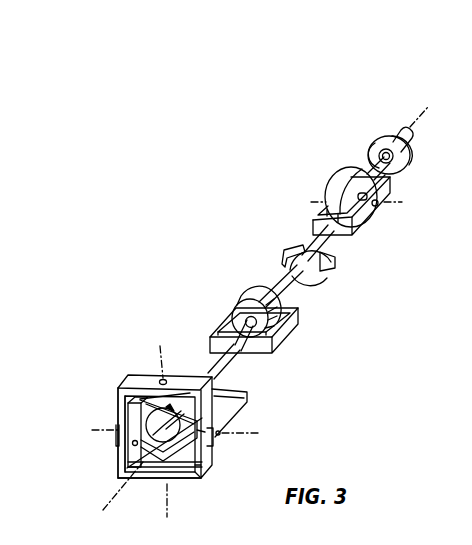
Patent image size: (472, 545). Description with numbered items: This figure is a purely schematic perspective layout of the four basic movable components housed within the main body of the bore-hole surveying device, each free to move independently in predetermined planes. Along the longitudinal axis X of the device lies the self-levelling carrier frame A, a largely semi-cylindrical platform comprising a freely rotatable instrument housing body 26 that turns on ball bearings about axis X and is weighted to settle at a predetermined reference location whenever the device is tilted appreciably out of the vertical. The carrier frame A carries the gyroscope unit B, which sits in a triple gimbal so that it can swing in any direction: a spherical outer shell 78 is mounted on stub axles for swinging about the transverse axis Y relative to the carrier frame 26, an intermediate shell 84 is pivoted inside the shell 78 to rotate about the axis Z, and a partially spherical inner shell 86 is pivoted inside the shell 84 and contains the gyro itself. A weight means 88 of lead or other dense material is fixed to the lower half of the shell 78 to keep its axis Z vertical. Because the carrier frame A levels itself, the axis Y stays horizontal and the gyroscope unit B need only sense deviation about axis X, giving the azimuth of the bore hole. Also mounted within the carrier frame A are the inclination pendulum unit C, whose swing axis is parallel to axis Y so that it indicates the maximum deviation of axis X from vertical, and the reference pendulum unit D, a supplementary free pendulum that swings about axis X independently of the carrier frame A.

The carrier frame body 26 is at (228, 422).
The outer shell 78 is at (142, 380).
The intermediate shell 84 is at (135, 453).
The inner shell 86 is at (208, 474).
The weight means 88 is at (180, 478).
The self-levelling carrier frame A is at (279, 239).
The gyroscope unit B is at (135, 427).
The inclination pendulum unit C is at (319, 179).
The reference pendulum unit D is at (221, 313).
The longitudinal axis X is at (265, 309).
The transverse axis Y is at (175, 429).
The Z-axis Z is at (164, 428).